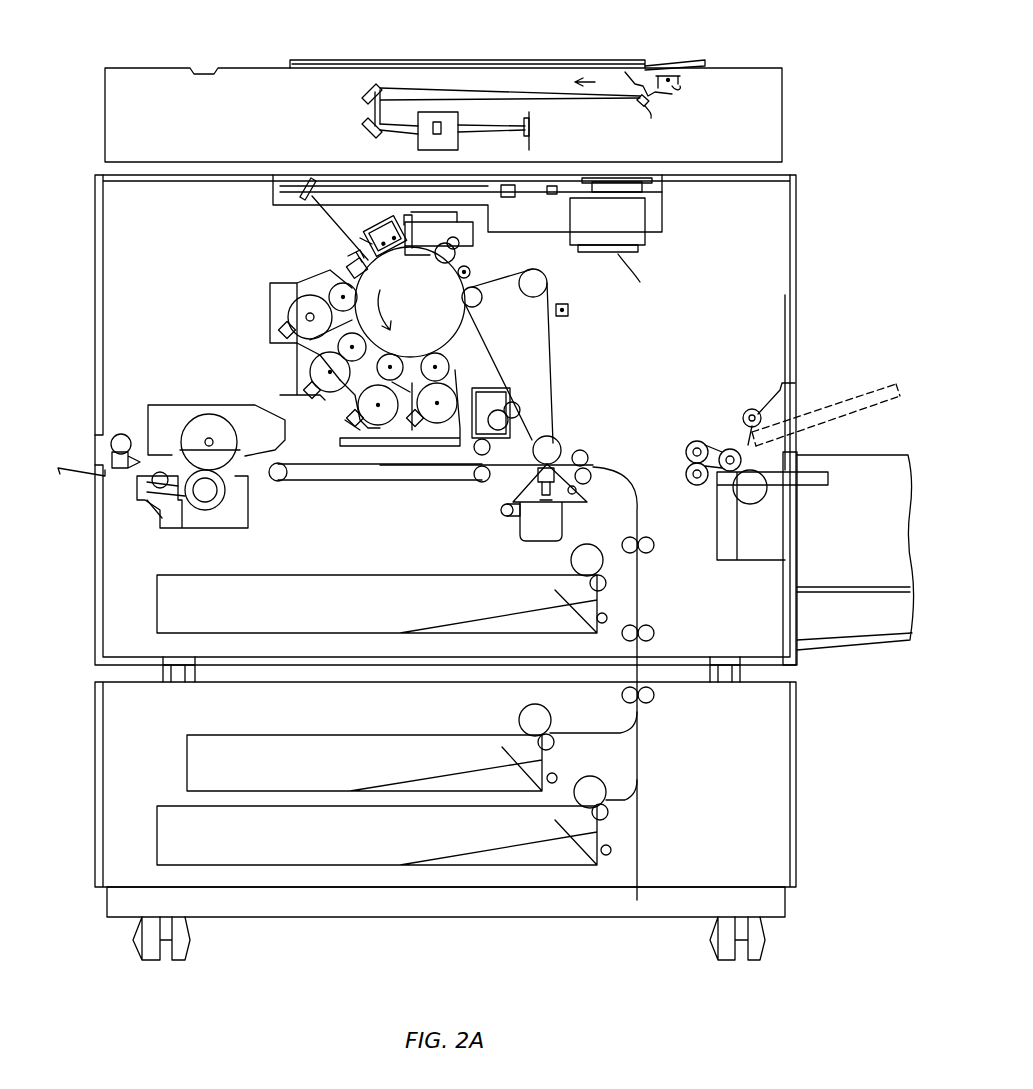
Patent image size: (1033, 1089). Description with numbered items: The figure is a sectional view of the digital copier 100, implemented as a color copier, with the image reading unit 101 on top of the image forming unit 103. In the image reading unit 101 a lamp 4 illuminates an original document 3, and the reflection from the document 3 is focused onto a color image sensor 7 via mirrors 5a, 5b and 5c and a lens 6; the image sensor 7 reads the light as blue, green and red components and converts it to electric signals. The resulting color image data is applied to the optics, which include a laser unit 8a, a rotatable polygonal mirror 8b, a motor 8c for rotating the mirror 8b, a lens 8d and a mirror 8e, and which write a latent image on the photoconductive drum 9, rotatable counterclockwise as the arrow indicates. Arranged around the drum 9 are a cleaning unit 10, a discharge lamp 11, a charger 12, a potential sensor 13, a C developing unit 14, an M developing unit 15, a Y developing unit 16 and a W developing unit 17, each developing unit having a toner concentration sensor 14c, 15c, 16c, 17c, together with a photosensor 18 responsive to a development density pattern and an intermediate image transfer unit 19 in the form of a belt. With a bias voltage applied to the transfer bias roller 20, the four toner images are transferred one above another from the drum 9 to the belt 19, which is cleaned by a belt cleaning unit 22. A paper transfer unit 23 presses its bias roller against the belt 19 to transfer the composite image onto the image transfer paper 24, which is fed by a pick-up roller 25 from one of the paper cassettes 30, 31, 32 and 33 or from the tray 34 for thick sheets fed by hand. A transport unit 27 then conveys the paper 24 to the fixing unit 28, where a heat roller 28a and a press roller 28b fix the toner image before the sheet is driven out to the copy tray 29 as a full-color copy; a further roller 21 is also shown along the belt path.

The original document 3 is at (555, 57).
The lamp 4 is at (674, 90).
The mirror 5a is at (650, 122).
The mirror 5b is at (356, 96).
The mirror 5c is at (356, 132).
The lens 6 is at (460, 140).
The color image sensor 7 is at (533, 128).
The laser unit 8a is at (575, 206).
The rotatable polygonal mirror 8b is at (663, 200).
The motor 8c is at (642, 280).
The lens 8d is at (512, 198).
The mirror 8e is at (302, 194).
The photoconductive drum 9 is at (472, 290).
The cleaning unit 10 is at (475, 238).
The discharge lamp 11 is at (404, 262).
The charger 12 is at (410, 302).
The potential sensor 13 is at (342, 264).
The C developing unit 14 is at (290, 308).
The toner concentration sensor 14c is at (281, 328).
The M developing unit 15 is at (295, 358).
The toner concentration sensor 15c is at (302, 388).
The Y developing unit 16 is at (340, 410).
The toner concentration sensor 16c is at (348, 420).
The W developing unit 17 is at (440, 428).
The toner concentration sensor 17c is at (415, 430).
The photosensor 18 is at (460, 348).
The intermediate image transfer unit 19 is at (553, 365).
The transfer bias roller 20 is at (478, 308).
The secondary transfer roller 21 is at (545, 436).
The belt cleaning unit 22 is at (484, 482).
The paper transfer unit 23 is at (565, 514).
The image transfer paper 24 is at (748, 465).
The pick-up roller 25 is at (705, 446).
The transport unit 27 is at (353, 482).
The fixing unit 28 is at (255, 524).
The heat roller 28a is at (205, 430).
The press roller 28b is at (225, 490).
The copy tray 29 is at (72, 465).
The paper cassette 30 is at (870, 453).
The paper cassette 31 is at (600, 607).
The paper cassette 32 is at (545, 768).
The paper cassette 33 is at (600, 840).
The tray 34 is at (848, 405).
The digital copier 100 is at (405, 918).
The image reading unit 101 is at (783, 118).
The image forming unit 103 is at (797, 250).